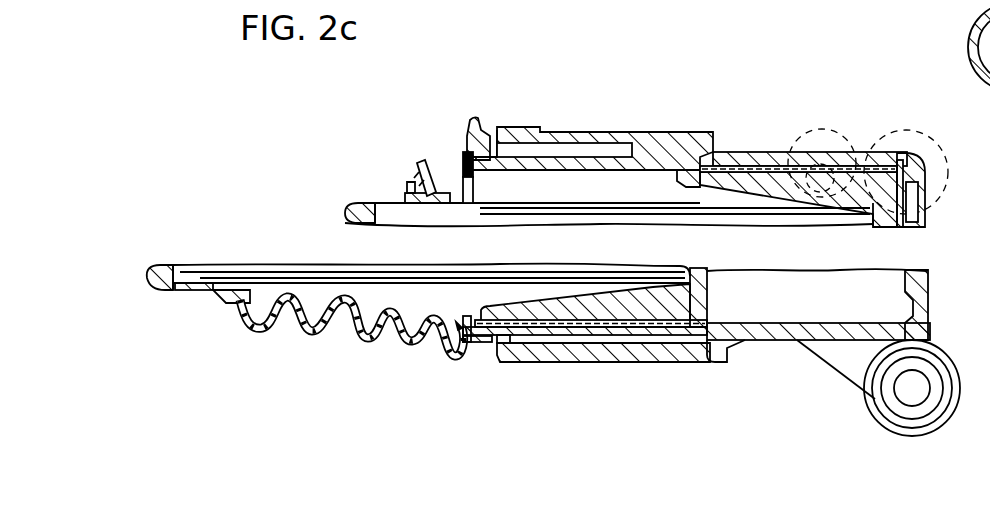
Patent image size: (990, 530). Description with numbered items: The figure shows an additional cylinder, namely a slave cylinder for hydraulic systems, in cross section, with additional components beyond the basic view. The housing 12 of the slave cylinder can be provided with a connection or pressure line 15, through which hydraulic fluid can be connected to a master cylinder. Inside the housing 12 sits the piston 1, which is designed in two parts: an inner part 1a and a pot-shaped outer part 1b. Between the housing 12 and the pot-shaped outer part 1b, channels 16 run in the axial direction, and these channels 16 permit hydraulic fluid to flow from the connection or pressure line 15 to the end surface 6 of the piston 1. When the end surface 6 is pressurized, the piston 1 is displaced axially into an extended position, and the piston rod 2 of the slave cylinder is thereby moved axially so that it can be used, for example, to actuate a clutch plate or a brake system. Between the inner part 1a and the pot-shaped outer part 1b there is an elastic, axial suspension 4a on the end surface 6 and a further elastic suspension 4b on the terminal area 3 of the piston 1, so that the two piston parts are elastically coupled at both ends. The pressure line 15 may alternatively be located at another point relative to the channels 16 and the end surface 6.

The piston 1 is at (769, 166).
The inner part 1a is at (788, 170).
The pot-shaped outer part 1b is at (868, 152).
The piston rod 2 is at (392, 196).
The terminal area 3 is at (450, 354).
The elastic axial suspension 4a is at (688, 342).
The elastic suspension 4b is at (473, 342).
The end surface 6 is at (930, 171).
The housing 12 is at (643, 134).
The connection or pressure line 15 is at (839, 150).
The channels 16 is at (737, 149).